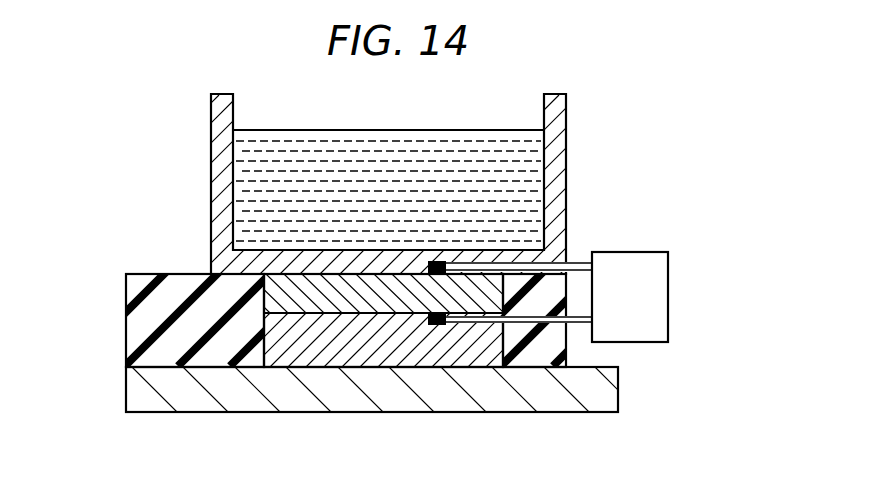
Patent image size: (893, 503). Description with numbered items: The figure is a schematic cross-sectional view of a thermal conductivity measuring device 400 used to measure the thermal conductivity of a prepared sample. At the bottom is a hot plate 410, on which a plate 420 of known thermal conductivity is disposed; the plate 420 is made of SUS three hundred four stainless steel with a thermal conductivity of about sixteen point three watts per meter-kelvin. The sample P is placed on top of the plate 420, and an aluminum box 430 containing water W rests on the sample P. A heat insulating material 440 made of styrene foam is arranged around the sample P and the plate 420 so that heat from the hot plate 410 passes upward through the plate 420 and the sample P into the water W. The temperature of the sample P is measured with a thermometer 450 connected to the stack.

The thermal conductivity measuring device 400 is at (605, 108).
The hot plate 410 is at (457, 390).
The plate 420 is at (378, 372).
The aluminum box 430 is at (222, 187).
The heat insulating material 440 is at (217, 350).
The thermometer 450 is at (630, 280).
The sample P is at (325, 302).
The water W is at (398, 178).